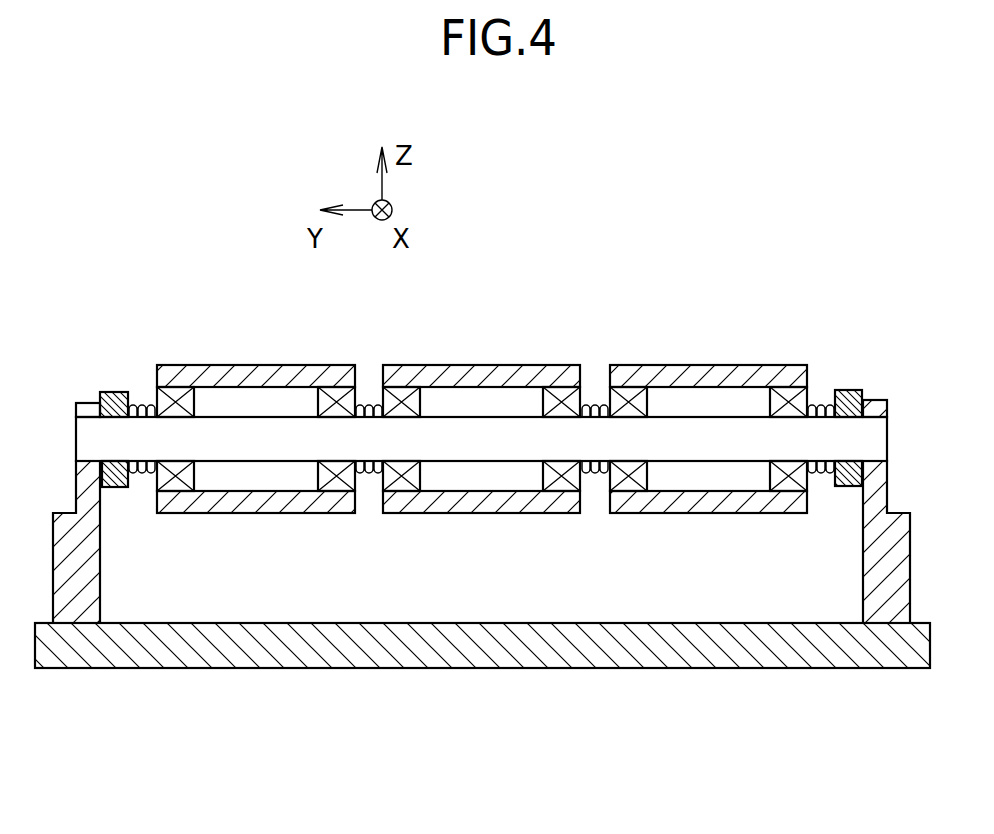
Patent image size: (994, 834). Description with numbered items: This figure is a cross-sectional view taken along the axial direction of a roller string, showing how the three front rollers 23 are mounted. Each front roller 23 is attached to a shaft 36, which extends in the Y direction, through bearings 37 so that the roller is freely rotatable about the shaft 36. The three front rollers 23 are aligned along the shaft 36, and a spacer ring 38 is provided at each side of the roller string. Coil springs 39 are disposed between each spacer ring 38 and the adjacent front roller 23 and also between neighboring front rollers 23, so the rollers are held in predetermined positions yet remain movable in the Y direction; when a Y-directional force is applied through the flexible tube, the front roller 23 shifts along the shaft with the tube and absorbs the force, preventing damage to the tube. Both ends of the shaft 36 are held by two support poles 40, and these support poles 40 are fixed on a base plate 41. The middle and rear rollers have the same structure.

The front roller 23 is at (258, 366).
The shaft 36 is at (262, 445).
The bearing 37 is at (192, 477).
The spacer ring 38 is at (113, 392).
The coil spring 39 is at (137, 400).
The support pole 40 is at (100, 560).
The base plate 41 is at (479, 668).